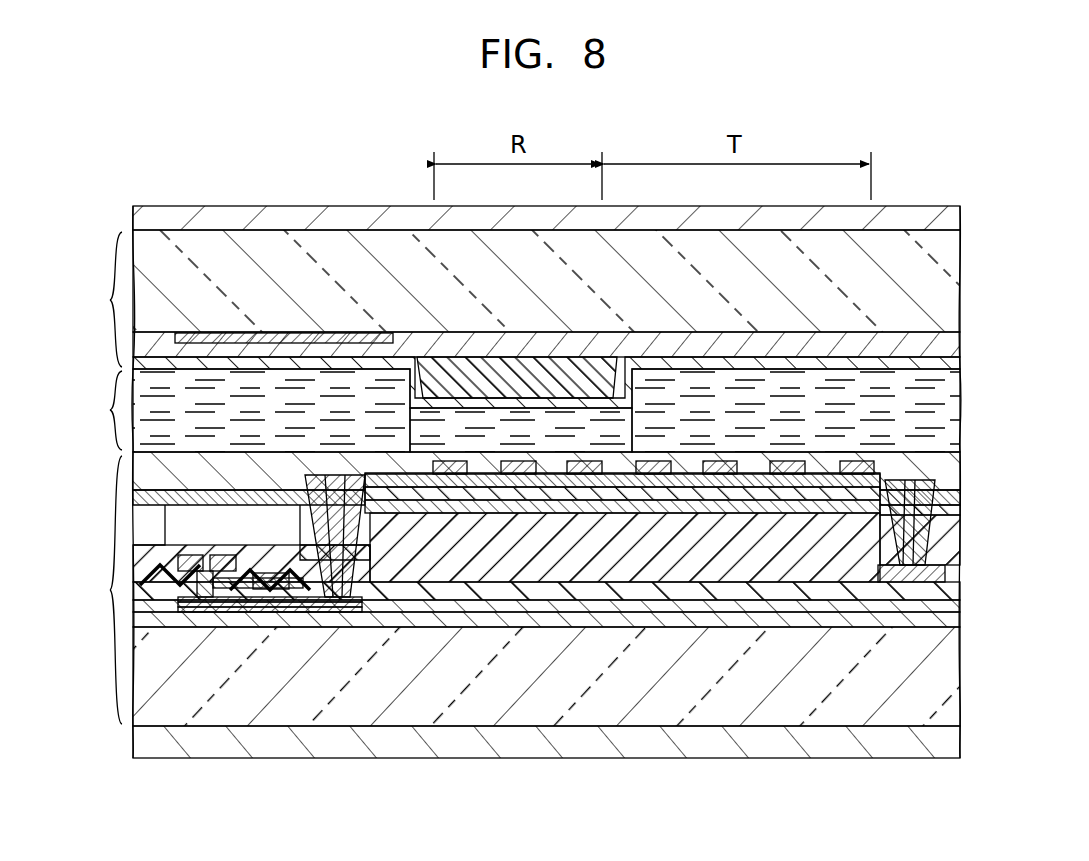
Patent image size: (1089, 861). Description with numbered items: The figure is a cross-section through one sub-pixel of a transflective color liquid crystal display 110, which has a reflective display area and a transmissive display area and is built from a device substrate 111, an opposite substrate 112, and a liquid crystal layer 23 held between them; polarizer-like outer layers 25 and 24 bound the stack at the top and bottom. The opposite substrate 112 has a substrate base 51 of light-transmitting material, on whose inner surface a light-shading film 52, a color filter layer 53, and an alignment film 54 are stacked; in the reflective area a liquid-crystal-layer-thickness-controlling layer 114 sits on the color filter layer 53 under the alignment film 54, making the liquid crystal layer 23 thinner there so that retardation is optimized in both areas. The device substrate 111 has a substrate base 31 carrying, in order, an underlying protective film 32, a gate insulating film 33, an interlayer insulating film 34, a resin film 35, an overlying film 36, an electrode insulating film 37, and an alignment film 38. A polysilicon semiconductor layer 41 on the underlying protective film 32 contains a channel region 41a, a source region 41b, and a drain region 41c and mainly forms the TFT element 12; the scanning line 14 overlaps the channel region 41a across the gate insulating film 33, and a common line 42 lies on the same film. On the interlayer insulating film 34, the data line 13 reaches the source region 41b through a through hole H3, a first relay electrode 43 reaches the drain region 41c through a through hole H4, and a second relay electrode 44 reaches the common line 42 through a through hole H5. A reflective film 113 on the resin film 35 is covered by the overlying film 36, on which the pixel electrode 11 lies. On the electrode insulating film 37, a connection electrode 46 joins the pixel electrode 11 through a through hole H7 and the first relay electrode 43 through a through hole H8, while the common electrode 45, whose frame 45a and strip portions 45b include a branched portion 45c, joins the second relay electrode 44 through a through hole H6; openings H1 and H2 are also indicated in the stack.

The liquid crystal display 110 is at (915, 160).
The upper polarizing plate 25 is at (133, 216).
The substrate base 51 is at (945, 256).
The light-shading film 52 is at (232, 332).
The color filter layer 53 is at (960, 345).
The alignment film 54 is at (960, 363).
The liquid-crystal-layer-thickness-controlling layer 114 is at (417, 378).
The opposite substrate 112 is at (91, 299).
The liquid crystal layer 23 is at (516, 410).
The alignment film 38 is at (960, 478).
The common electrode 45 is at (653, 426).
The frame 45a is at (470, 460).
The bump 45b is at (717, 460).
The branched portion 45c is at (857, 460).
The through hole H7 is at (700, 455).
The through hole H6 is at (912, 480).
The electrode insulating film 37 is at (960, 495).
The overlying film 36 is at (960, 510).
The reflective film 113 is at (545, 513).
The resin film 35 is at (960, 542).
The pixel electrode 11 is at (696, 590).
The hole H1 is at (382, 512).
The hole H2 is at (796, 542).
The through hole H5 is at (870, 560).
The first relay electrode 43 is at (372, 552).
The second relay electrode 44 is at (945, 570).
The common line 42 is at (905, 600).
The interlayer insulating film 34 is at (960, 590).
The gate insulating film 33 is at (960, 608).
The underlying protective film 32 is at (960, 623).
The substrate base 31 is at (960, 682).
The lower polarizing plate 24 is at (133, 745).
The device substrate 111 is at (92, 590).
The semiconductor layer 41 is at (270, 728).
The channel region 41a is at (262, 612).
The source region 41b is at (205, 612).
The drain region 41c is at (318, 612).
The TFT element 12 is at (358, 626).
The data line 13 is at (180, 555).
The scanning line 14 is at (260, 573).
The through hole H3 is at (215, 555).
The through hole H4 is at (280, 573).
The through hole H8 is at (328, 490).
The connection electrode 46 is at (352, 480).